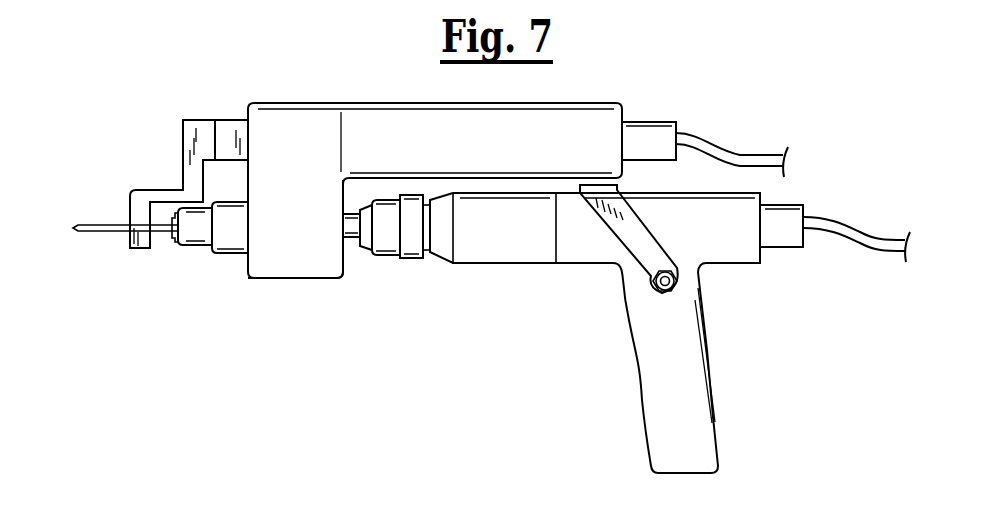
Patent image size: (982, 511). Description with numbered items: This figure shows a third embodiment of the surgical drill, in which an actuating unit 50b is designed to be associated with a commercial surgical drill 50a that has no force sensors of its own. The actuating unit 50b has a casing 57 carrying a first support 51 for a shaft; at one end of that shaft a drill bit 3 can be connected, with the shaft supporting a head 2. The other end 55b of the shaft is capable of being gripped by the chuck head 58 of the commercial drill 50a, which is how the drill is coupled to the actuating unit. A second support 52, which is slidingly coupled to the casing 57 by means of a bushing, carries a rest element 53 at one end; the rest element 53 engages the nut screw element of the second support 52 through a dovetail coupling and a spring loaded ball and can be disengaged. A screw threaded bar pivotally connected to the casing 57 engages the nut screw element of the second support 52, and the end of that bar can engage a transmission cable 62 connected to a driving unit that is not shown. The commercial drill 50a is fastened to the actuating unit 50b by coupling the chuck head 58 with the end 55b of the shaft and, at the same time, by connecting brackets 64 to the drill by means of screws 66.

The head 2 is at (200, 248).
The drill bit 3 is at (105, 232).
The commercial surgical drill 50a is at (495, 264).
The actuating unit 50b is at (390, 100).
The first support 51 is at (267, 270).
The second support 52 is at (228, 132).
The rest element 53 is at (202, 128).
The end of shaft 55b is at (352, 235).
The casing 57 is at (602, 103).
The chuck head 58 is at (380, 240).
The transmission cable 62 is at (703, 140).
The brackets 64 is at (617, 217).
The screws 66 is at (656, 286).